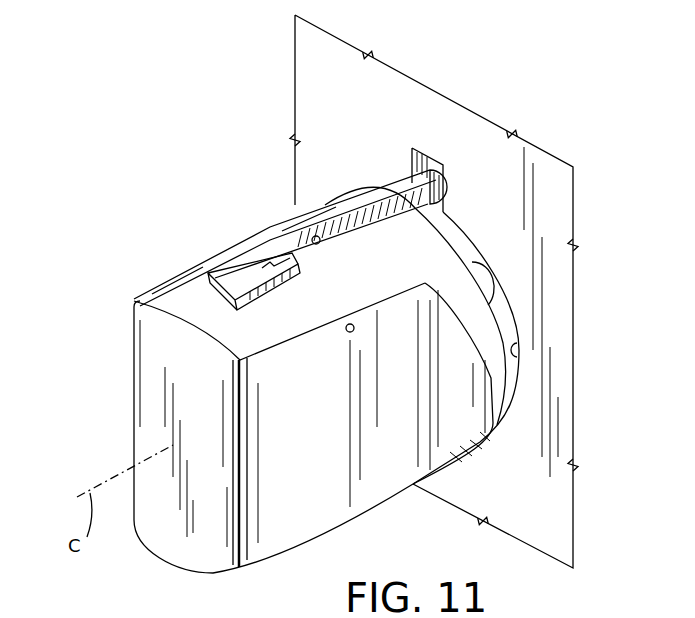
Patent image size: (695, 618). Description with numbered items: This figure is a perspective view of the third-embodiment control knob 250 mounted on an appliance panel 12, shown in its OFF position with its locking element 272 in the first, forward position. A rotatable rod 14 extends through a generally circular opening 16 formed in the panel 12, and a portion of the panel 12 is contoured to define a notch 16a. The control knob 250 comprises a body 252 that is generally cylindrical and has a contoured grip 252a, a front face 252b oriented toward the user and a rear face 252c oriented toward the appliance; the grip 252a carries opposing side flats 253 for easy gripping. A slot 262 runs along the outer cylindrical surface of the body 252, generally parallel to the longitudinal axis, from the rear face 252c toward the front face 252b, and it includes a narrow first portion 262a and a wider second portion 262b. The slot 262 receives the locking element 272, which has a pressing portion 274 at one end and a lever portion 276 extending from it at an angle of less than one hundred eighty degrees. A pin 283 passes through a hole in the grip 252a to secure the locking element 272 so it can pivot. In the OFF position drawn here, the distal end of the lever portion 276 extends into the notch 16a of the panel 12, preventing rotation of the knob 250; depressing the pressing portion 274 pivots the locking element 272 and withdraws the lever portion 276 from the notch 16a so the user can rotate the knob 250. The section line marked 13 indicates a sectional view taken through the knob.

The panel 12 is at (553, 172).
The section line 13- 13 is at (578, 197).
The rotatable rod 14 is at (494, 288).
The opening 16 is at (517, 347).
The notch 16a is at (425, 158).
The control knob 250 is at (357, 390).
The body 252 is at (369, 506).
The contoured grip 252a is at (293, 517).
The front face 252b is at (173, 513).
The rear face 252c is at (500, 427).
The side flats 253 is at (312, 473).
The slot 262 is at (255, 240).
The narrow first portion 262a is at (314, 236).
The wider second portion 262b is at (208, 280).
The locking element 272 is at (271, 253).
The pressing portion 274 is at (235, 272).
The lever portion 276 is at (378, 210).
The pin 283 is at (349, 333).